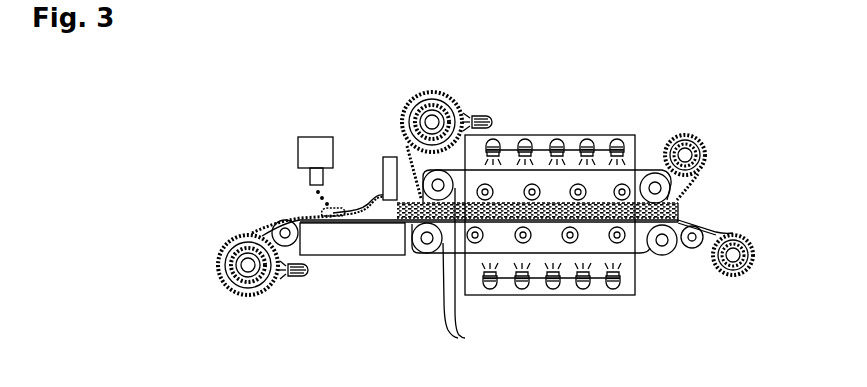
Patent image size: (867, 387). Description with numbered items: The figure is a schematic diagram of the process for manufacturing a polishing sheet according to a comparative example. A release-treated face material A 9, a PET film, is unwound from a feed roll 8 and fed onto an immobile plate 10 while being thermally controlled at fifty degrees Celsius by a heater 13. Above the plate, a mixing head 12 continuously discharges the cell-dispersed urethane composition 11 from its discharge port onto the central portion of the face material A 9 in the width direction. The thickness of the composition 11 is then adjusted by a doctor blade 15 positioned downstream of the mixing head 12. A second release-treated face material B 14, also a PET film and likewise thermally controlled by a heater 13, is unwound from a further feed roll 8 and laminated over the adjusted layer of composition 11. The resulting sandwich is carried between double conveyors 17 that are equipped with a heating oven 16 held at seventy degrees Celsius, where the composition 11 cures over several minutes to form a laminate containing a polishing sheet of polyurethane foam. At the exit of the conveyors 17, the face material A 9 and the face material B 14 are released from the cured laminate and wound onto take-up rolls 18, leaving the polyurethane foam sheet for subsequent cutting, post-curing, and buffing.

The feed roll 8 is at (437, 102).
The face material A 9 is at (270, 222).
The immobile plate 10 is at (362, 243).
The cell-dispersed urethane composition 11 is at (325, 207).
The mixing head 12 is at (315, 150).
The heater 13 is at (488, 118).
The face material B 14 is at (407, 143).
The doctor blade 15 is at (390, 172).
The heating oven 16 is at (588, 148).
The double conveyors 17 is at (467, 268).
The take-up rolls 18 is at (698, 140).